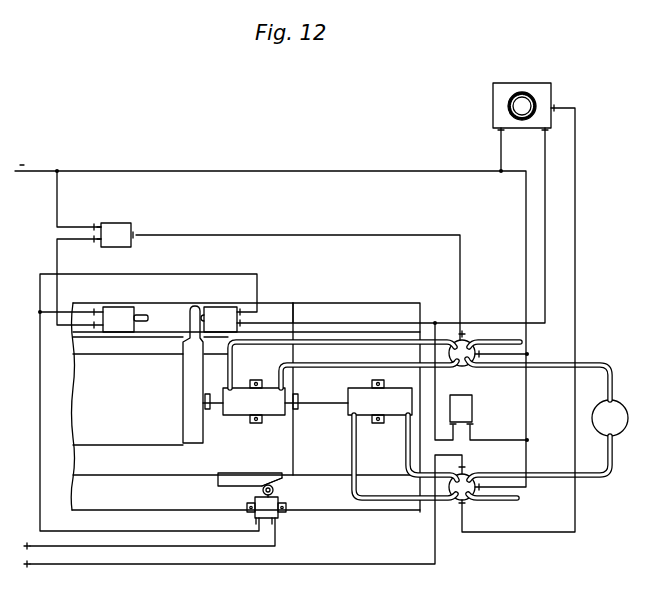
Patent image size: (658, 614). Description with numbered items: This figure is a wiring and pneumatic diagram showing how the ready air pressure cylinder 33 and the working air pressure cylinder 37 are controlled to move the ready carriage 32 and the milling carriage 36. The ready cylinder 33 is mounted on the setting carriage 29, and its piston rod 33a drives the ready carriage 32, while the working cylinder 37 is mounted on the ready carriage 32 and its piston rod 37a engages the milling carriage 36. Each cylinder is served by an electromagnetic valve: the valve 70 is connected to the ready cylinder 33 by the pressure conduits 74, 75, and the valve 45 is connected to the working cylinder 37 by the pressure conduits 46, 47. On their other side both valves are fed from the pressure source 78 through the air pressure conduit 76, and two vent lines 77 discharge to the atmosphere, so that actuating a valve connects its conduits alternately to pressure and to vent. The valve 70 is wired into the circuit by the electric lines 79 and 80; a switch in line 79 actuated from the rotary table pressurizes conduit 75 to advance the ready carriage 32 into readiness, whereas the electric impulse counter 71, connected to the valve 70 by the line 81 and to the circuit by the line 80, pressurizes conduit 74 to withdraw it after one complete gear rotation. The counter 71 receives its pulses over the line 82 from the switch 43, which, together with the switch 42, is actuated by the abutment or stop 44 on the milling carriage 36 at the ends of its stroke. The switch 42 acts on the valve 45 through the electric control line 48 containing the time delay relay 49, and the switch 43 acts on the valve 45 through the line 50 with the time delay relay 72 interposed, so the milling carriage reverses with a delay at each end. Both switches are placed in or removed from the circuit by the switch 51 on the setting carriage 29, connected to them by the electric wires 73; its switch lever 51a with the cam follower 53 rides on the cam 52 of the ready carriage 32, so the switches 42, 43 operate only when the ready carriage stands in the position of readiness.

The setting carriage 29 is at (338, 512).
The ready carriage 32 is at (290, 437).
The ready air pressure cylinder 33 is at (362, 405).
The piston rod 33a is at (337, 401).
The milling carriage 36 is at (172, 427).
The working air pressure cylinder 37 is at (270, 405).
The piston rod 37a is at (217, 404).
The switch 42 is at (118, 307).
The switch 43 is at (228, 310).
The abutment or stop 44 is at (193, 306).
The electromagnetic valve 45 is at (465, 336).
The pressure conduit 46 is at (320, 341).
The pressure conduit 47 is at (363, 364).
The electric control line 48 is at (55, 249).
The time delay relay 49 is at (121, 226).
The line 50 is at (436, 402).
The switch 51 is at (258, 508).
The switch lever 51a is at (278, 492).
The cam 52 is at (218, 482).
The cam follower 53 is at (262, 488).
The electromagnetic valve 70 is at (455, 500).
The electric impulse counter 71 is at (513, 82).
The time delay relay 72 is at (470, 408).
The electric lines or wires 73 is at (167, 275).
The pressure conduit 74 is at (355, 455).
The pressure conduit 75 is at (405, 437).
The air pressure conduit 76 is at (547, 472).
The vent lines 77 is at (490, 342).
The pressure source 78 is at (605, 429).
The electric line 79 is at (268, 565).
The electric line or wire 80 is at (195, 171).
The electric line 81 is at (575, 243).
The line 82 is at (547, 207).